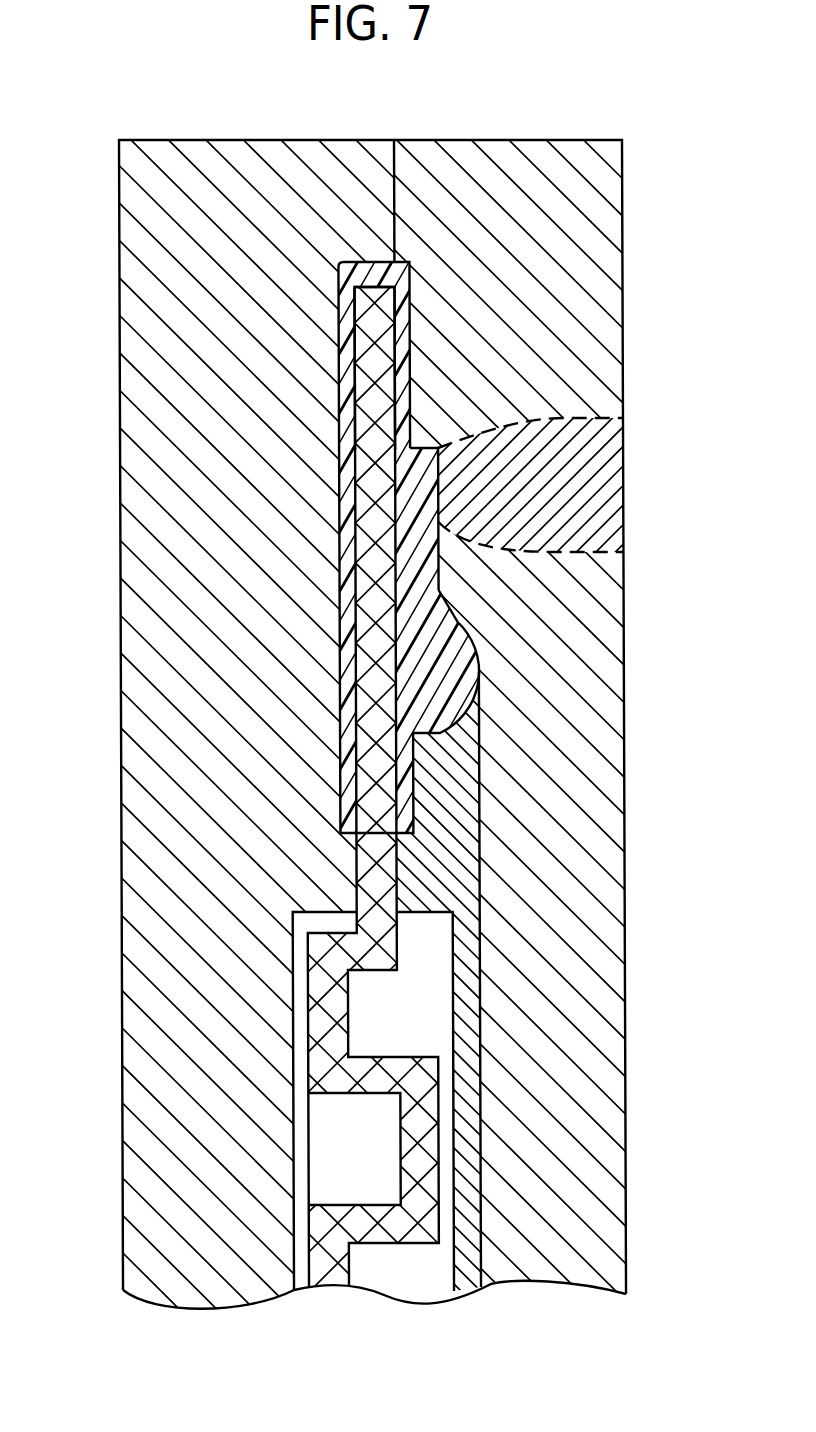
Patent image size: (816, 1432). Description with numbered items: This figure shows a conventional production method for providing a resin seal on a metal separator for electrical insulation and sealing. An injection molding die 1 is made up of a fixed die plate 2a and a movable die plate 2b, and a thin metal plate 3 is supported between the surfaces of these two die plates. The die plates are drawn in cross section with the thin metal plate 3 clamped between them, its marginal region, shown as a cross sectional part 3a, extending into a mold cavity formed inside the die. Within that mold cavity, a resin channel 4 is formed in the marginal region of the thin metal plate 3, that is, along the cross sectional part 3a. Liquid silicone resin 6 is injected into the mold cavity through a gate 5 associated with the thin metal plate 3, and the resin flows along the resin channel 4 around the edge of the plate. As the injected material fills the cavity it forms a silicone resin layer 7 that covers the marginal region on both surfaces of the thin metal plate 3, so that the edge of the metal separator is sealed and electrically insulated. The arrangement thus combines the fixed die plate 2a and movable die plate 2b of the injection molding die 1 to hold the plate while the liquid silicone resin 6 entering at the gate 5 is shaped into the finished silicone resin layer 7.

The injection molding die 1 is at (568, 138).
The fixed die plate 2a is at (498, 162).
The movable die plate 2b is at (260, 158).
The thin metal plate 3 is at (400, 935).
The cross sectional part 3a is at (342, 327).
The resin channel 4 is at (400, 266).
The gate 5 is at (440, 490).
The liquid silicone resin 6 is at (594, 437).
The silicone resin layer 7 is at (427, 643).